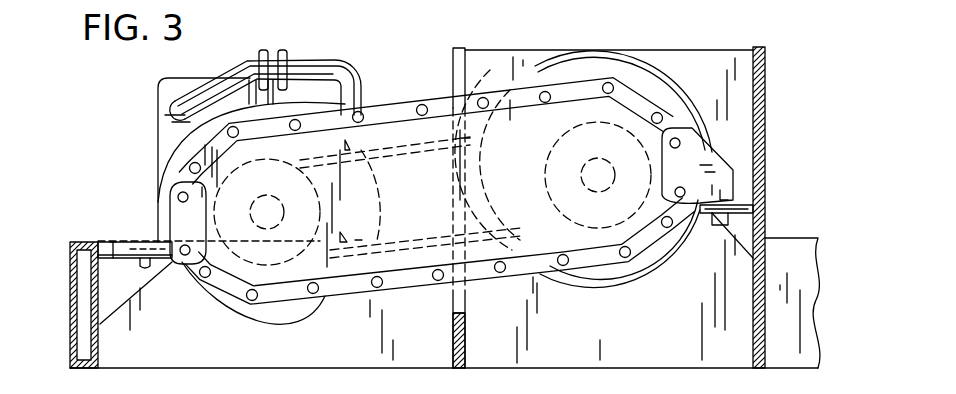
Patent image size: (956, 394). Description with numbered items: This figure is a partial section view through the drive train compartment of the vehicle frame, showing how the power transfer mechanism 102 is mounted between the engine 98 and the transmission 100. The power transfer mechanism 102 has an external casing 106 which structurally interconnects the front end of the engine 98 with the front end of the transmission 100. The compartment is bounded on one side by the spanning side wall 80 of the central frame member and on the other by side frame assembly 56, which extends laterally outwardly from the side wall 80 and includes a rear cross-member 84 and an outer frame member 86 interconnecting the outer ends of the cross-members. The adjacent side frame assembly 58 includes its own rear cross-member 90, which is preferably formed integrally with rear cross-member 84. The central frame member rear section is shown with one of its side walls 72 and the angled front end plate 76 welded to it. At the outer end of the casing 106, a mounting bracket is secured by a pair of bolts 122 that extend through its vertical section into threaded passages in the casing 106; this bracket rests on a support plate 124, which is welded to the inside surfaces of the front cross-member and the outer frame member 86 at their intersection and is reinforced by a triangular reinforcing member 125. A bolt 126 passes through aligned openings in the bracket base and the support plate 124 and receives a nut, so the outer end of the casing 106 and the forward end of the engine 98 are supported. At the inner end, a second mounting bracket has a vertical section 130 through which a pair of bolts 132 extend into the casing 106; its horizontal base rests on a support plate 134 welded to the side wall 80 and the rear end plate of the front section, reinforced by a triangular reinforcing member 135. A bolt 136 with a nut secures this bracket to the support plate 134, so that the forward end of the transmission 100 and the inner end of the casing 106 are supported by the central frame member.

The side frame assembly 56 is at (72, 226).
The side frame assembly 58 is at (809, 224).
The side wall 72 is at (452, 70).
The angled front end plate 76 is at (492, 68).
The spanning side wall 80 is at (766, 85).
The rear cross-member 84 is at (215, 362).
The outer frame member 86 is at (72, 303).
The rear cross-member 90 is at (812, 284).
The engine 98 is at (124, 101).
The transmission 100 is at (681, 66).
The power transfer mechanism 102 is at (406, 63).
The power transfer casing 106 is at (407, 292).
The bolts 122 is at (179, 247).
The support plate 124 is at (112, 241).
The triangular reinforcing member 125 is at (146, 268).
The bolt 126 is at (148, 272).
The vertical section 130 is at (702, 172).
The bolts 132 is at (682, 192).
The support plate 134 is at (745, 200).
The triangular reinforcing member 135 is at (727, 238).
The bolt 136 is at (712, 217).